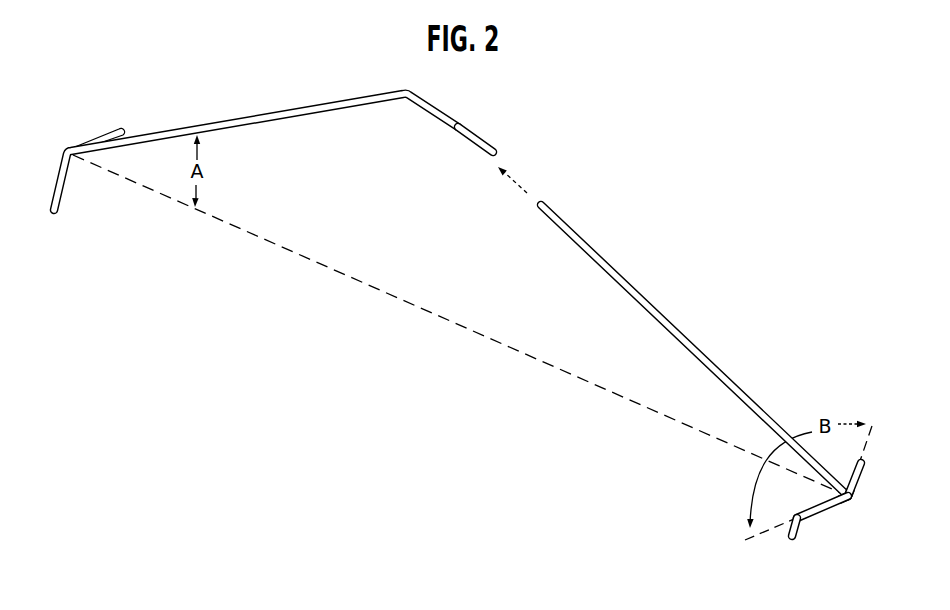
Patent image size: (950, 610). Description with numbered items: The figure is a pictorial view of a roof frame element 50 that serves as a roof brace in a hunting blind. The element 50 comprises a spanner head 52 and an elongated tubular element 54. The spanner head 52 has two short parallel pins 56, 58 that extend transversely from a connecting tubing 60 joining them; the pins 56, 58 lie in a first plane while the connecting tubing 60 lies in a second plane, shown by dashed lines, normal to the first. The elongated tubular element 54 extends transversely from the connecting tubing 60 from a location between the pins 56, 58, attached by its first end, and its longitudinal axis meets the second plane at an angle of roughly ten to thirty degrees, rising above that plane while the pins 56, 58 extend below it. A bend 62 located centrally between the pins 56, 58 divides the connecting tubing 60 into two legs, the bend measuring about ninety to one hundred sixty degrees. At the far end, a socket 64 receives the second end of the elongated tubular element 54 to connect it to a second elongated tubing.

The element 50 is at (478, 336).
The spanner head 52 is at (830, 504).
The elongated tubular element 54 is at (648, 323).
The pin 56 is at (866, 473).
The pin 58 is at (786, 535).
The connecting tubing 60 is at (815, 507).
The bend 62 is at (853, 503).
The socket 64 is at (477, 140).